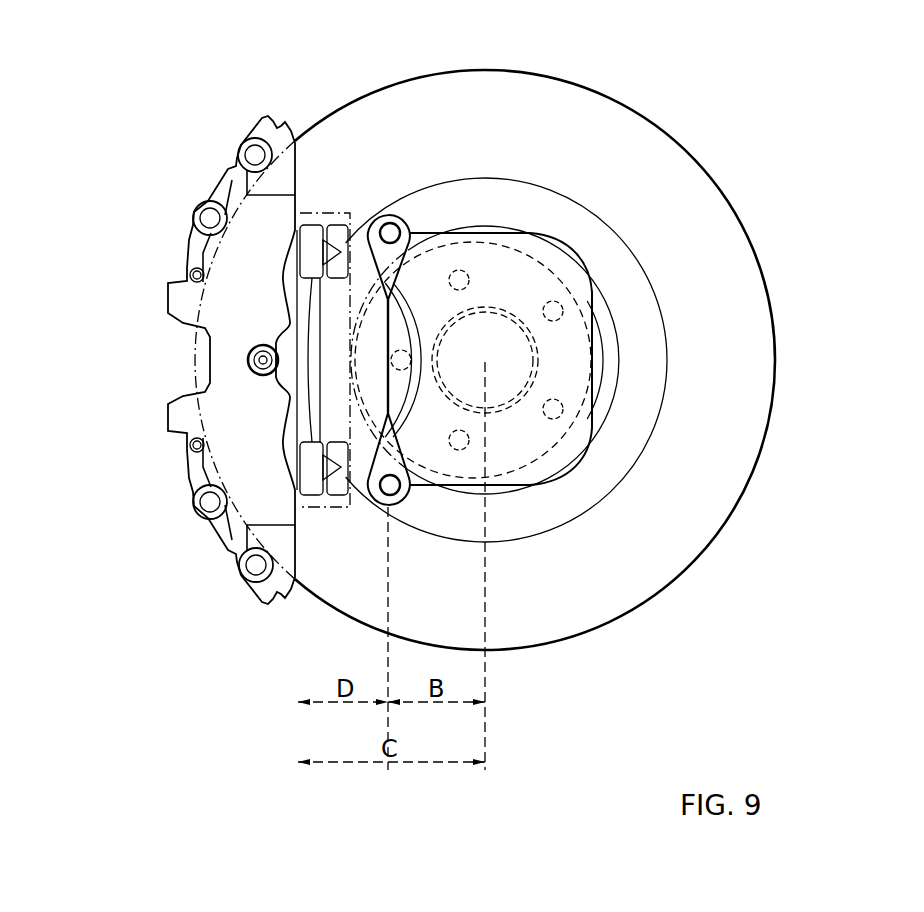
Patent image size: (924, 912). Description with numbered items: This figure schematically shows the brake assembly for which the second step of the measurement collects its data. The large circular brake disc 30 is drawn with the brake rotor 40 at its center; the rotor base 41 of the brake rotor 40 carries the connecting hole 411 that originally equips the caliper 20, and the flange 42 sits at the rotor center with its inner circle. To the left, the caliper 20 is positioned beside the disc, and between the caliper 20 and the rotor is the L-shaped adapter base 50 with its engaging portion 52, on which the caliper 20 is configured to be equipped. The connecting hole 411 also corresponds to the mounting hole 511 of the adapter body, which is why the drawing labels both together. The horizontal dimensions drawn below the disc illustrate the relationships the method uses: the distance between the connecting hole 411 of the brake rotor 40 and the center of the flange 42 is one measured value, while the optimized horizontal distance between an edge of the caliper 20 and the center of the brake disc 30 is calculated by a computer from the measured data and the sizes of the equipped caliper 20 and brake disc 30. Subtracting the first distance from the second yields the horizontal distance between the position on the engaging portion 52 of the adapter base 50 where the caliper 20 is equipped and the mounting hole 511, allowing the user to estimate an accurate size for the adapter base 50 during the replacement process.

The caliper 20 is at (193, 178).
The brake disc 30 is at (752, 188).
The brake rotor 40 is at (573, 240).
The rotor base 41 is at (528, 222).
The flange 42 is at (578, 358).
The L-shaped adapter base 50 is at (355, 205).
The engaging portion 52 is at (298, 770).
The connecting hole 411 is at (437, 264).
The mounting hole 511 is at (390, 397).